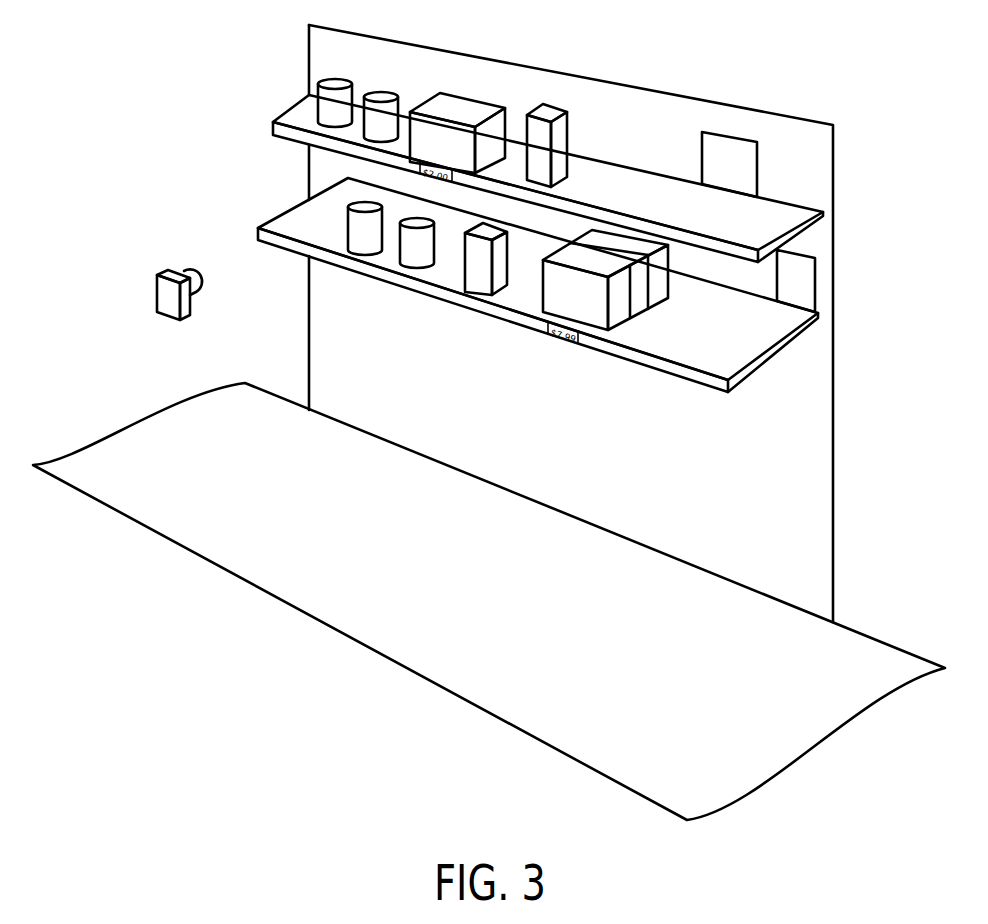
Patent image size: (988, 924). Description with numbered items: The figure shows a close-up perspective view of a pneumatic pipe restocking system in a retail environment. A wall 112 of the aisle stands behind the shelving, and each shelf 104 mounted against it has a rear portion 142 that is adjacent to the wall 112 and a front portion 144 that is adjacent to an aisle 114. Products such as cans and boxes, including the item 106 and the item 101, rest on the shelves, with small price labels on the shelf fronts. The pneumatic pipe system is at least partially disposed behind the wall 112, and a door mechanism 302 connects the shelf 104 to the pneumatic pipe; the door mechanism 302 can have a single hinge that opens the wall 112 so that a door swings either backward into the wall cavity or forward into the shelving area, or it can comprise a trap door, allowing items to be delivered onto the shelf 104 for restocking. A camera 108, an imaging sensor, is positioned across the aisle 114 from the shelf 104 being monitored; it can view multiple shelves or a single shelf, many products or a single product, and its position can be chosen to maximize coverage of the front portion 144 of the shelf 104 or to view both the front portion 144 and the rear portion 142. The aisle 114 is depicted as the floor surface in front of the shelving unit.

The product item 101 is at (480, 278).
The shelf 104 is at (257, 89).
The product item 106 is at (327, 96).
The camera 108 is at (170, 320).
The wall 112 is at (680, 115).
The aisle 114 is at (337, 613).
The rear portion 142 is at (603, 175).
The front portion 144 is at (658, 333).
The door mechanism 302 is at (745, 139).